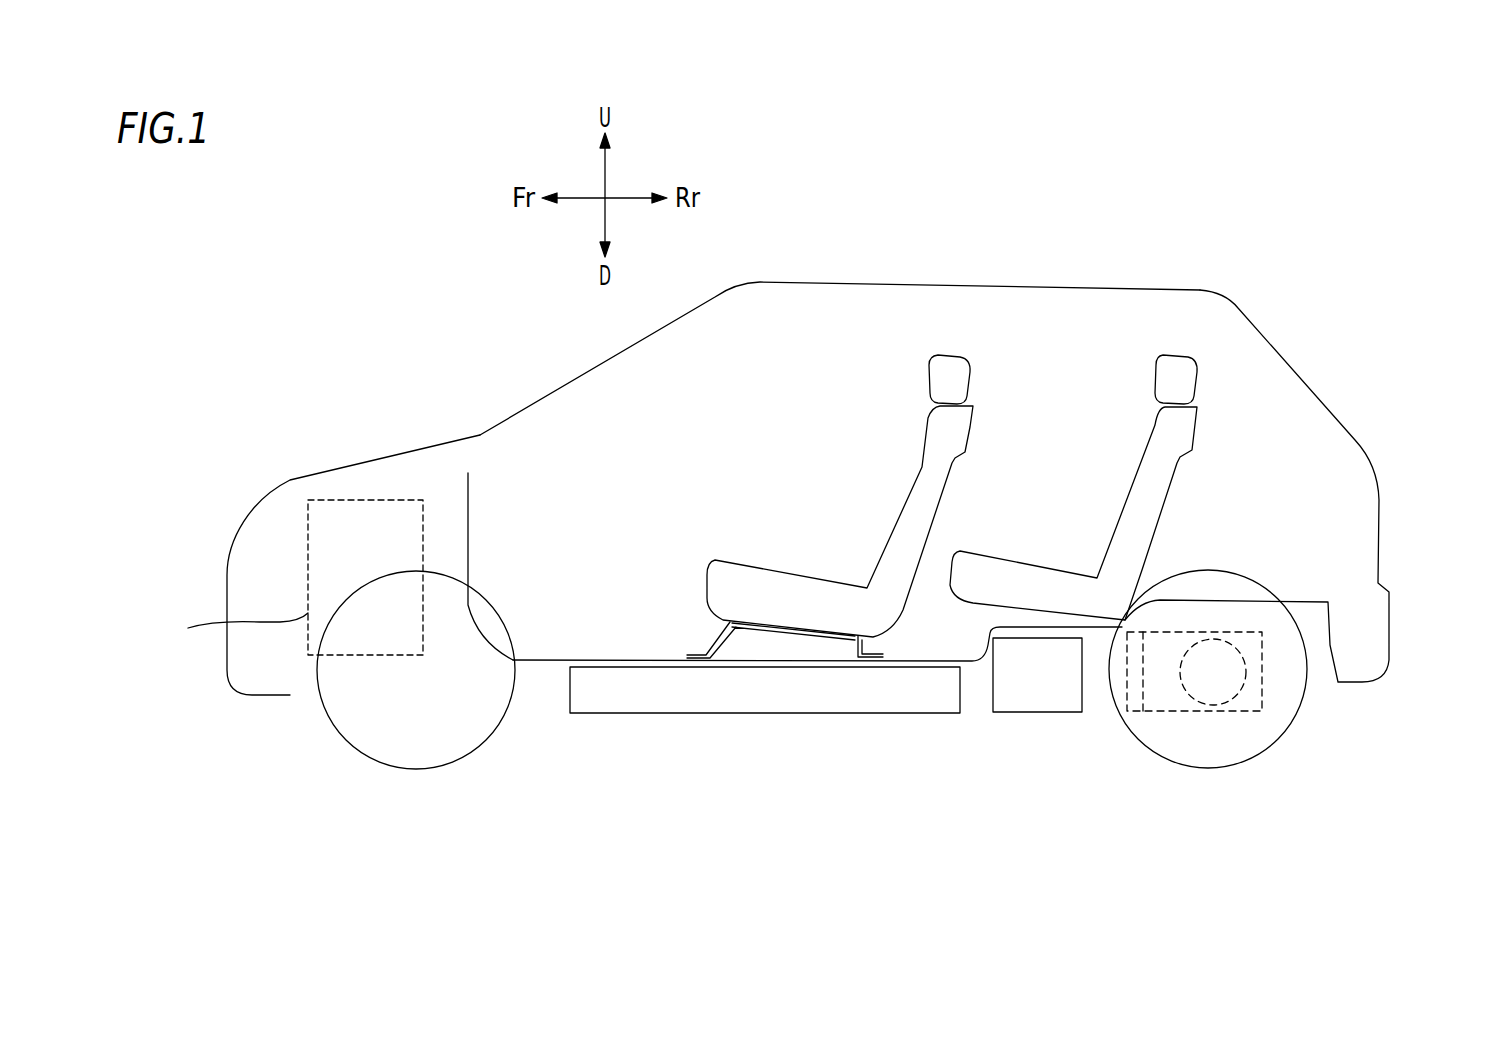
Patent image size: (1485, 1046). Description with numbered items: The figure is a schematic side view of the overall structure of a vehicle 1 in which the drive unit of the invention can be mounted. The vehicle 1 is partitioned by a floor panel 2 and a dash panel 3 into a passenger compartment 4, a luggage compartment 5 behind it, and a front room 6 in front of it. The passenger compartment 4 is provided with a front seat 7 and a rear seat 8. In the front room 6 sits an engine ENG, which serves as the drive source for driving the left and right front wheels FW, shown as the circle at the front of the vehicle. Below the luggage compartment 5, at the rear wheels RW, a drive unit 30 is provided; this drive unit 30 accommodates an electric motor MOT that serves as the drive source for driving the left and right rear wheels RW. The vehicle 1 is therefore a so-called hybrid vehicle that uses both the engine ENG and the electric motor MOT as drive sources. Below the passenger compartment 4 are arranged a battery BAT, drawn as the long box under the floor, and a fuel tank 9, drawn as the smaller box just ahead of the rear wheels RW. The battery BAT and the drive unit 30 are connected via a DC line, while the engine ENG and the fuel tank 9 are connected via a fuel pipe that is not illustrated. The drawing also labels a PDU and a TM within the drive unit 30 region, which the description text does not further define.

The vehicle 1 is at (788, 450).
The floor panel 2 is at (571, 662).
The dash panel 3 is at (470, 508).
The passenger compartment 4 is at (686, 450).
The luggage compartment 5 is at (1283, 462).
The front room 6 is at (279, 566).
The front seat 7 is at (908, 484).
The rear seat 8 is at (1138, 480).
The fuel tank 9 is at (1037, 713).
The drive unit 30 is at (1280, 698).
The engine ENG is at (283, 577).
The front wheels FW is at (487, 740).
The rear wheels RW is at (1293, 718).
The battery BAT is at (767, 715).
The power drive unit PDU is at (1137, 722).
The electric motor MOT is at (1235, 727).
The transmission TM is at (1237, 697).